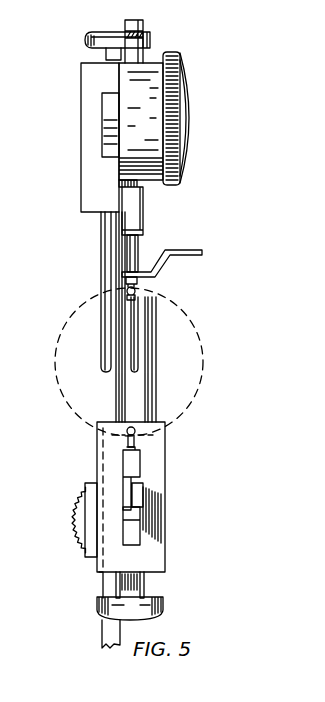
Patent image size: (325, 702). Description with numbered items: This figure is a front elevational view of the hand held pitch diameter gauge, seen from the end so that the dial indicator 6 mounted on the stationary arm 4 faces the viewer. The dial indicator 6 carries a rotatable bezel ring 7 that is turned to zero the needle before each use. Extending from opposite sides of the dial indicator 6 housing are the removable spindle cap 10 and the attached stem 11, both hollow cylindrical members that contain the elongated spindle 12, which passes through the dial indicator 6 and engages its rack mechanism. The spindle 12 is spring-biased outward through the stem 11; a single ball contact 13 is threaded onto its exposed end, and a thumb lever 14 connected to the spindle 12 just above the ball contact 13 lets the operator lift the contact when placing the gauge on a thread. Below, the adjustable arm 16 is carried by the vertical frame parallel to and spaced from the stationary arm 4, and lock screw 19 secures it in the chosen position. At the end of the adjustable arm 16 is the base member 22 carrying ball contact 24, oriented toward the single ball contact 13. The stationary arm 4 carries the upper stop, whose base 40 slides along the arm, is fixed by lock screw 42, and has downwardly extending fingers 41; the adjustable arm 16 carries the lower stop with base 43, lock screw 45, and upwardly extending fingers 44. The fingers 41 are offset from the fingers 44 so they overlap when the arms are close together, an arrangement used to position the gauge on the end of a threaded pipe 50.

The stationary arm 4 is at (102, 108).
The dial indicator 6 is at (188, 97).
The bezel ring 7 is at (178, 57).
The spindle cap 10 is at (143, 28).
The stem 11 is at (145, 195).
The spindle 12 is at (142, 245).
The ball contact 13 is at (138, 290).
The thumb lever 14 is at (190, 257).
The adjustable arm 16 is at (140, 517).
The lock screw 19 is at (73, 513).
The base member 22 is at (140, 457).
The ball contact 24 is at (135, 428).
The base 40 is at (82, 130).
The fingers 41 is at (110, 255).
The lock screw 42 is at (95, 33).
The base 43 is at (165, 480).
The fingers 44 is at (155, 350).
The lock screw 45 is at (163, 602).
The pipe 50 is at (193, 320).